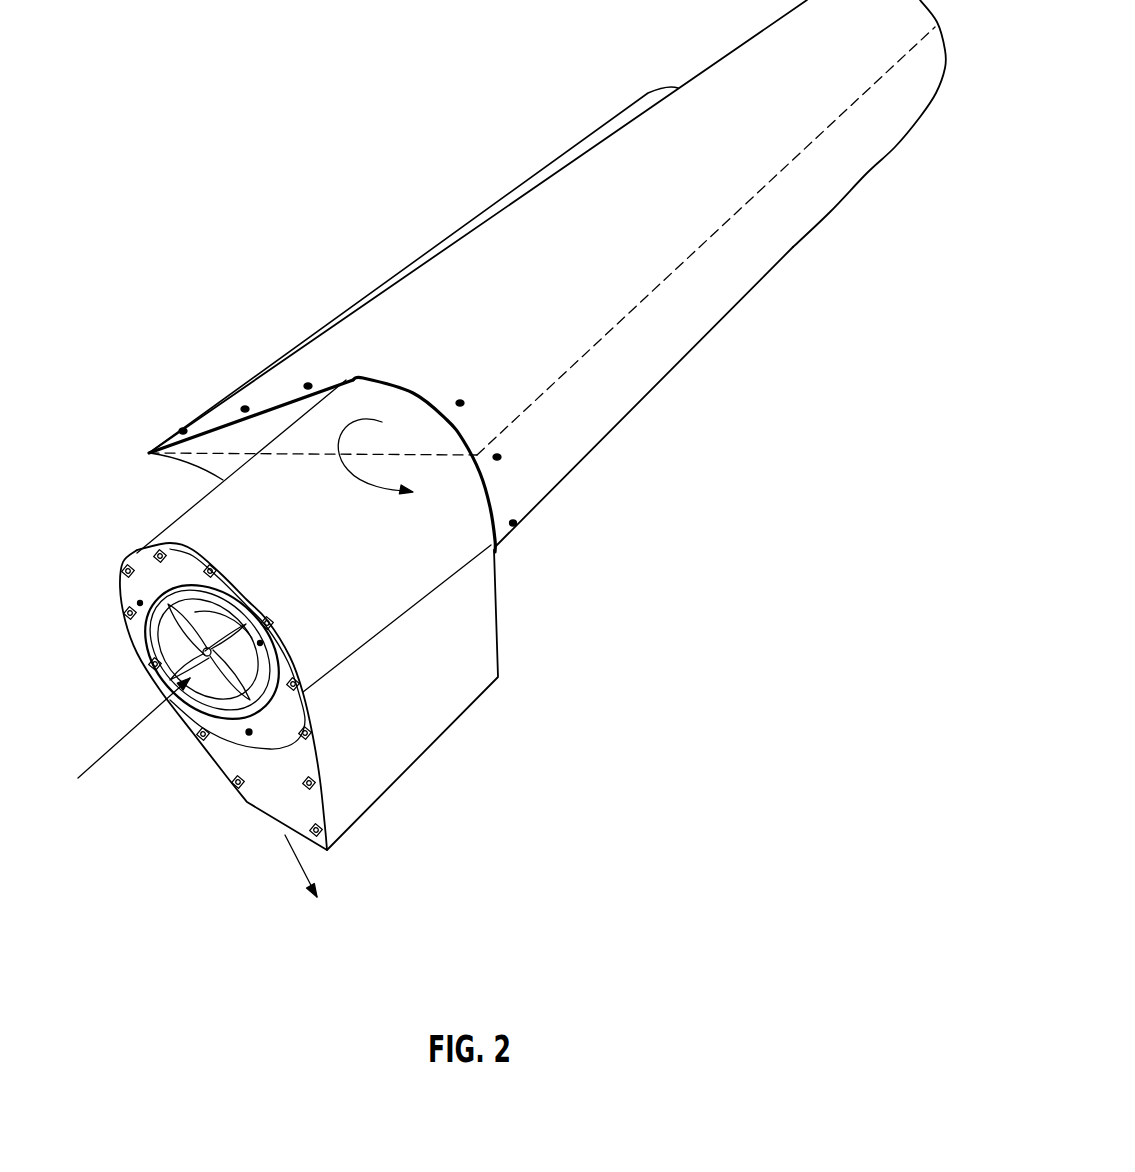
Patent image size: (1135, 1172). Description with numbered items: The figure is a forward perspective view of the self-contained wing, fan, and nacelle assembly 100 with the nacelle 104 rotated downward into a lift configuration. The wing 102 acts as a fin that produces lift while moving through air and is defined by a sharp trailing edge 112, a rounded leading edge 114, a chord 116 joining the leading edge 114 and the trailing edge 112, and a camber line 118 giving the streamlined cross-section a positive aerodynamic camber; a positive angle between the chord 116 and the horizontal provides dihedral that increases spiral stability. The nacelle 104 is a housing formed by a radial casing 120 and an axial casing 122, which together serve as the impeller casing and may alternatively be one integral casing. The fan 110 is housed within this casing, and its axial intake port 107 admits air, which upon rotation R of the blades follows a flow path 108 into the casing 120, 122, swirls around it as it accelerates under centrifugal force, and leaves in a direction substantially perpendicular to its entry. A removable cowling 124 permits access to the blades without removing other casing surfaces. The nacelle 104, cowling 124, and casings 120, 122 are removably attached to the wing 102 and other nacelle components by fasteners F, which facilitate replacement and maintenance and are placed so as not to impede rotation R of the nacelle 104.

The wing, fan, and nacelle assembly 100 is at (158, 428).
The wing 102 is at (590, 316).
The nacelle 104 is at (337, 845).
The axial intake port 107 is at (160, 678).
The flow path 108 is at (105, 758).
The fan 110 is at (147, 657).
The trailing edge 112 is at (583, 142).
The leading edge 114 is at (853, 103).
The chord 116 is at (183, 458).
The camber line 118 is at (267, 407).
The radial casing 120 is at (442, 691).
The axial casing 122 is at (253, 756).
The cowling 124 is at (133, 591).
The fasteners F is at (517, 525).
The rotation R is at (372, 488).